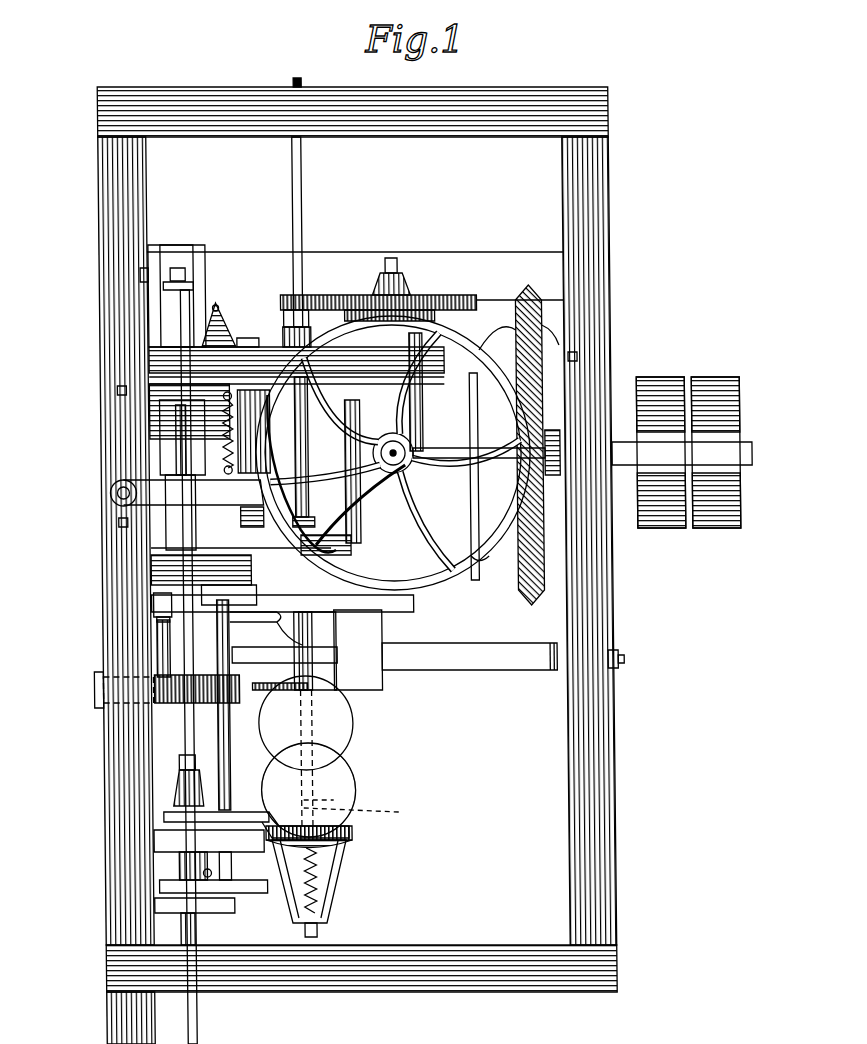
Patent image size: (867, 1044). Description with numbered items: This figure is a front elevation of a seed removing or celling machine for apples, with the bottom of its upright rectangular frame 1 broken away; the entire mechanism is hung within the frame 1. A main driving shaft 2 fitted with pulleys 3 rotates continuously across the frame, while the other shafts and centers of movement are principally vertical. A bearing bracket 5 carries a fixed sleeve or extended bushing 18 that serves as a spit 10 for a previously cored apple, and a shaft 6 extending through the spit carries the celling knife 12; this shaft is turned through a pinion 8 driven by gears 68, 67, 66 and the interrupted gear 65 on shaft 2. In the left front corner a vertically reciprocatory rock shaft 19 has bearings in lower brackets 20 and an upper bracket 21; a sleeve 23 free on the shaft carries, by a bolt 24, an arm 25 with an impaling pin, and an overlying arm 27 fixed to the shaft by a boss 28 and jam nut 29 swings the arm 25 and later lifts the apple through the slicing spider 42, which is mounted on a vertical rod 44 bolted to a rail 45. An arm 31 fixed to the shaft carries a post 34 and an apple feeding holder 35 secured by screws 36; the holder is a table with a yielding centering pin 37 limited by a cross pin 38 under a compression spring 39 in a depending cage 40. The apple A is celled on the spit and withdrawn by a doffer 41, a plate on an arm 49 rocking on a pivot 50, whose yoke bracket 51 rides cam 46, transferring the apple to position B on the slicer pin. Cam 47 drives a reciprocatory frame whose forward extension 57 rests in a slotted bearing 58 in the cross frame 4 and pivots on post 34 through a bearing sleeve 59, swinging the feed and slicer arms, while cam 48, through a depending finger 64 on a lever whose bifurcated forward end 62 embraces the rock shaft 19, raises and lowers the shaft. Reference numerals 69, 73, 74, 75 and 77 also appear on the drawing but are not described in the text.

The frame 1 is at (603, 184).
The main driving shaft 2 is at (628, 468).
The pulleys 3 is at (742, 482).
The cross frame 4 is at (421, 555).
The bearing bracket 5 is at (312, 545).
The shaft 6 is at (300, 430).
The pinion 8 is at (292, 292).
The spit 10 is at (331, 651).
The celling knife 12 is at (287, 721).
The fixed sleeve or extended bushing 18 is at (320, 660).
The rock shaft 19 is at (180, 312).
The lower brackets 20 is at (170, 840).
The upper bracket 21 is at (160, 450).
The sleeve 23 is at (175, 893).
The bolt 24 is at (205, 880).
The arm 25 is at (290, 875).
The arm 27 is at (258, 815).
The boss 28 is at (184, 782).
The jam nut 29 is at (174, 763).
The arm 31 is at (236, 808).
The post 34 is at (228, 783).
The apple feeding holder 35 is at (350, 832).
The screws 36 is at (228, 867).
The centering pin 37 is at (358, 806).
The cross pin 38 is at (340, 853).
The compression spring 39 is at (332, 903).
The cage 40 is at (324, 922).
The doffer 41 is at (272, 690).
The slicing spider 42 is at (92, 698).
The vertical rod 44 is at (158, 650).
The rail 45 is at (152, 608).
The cam 46 is at (362, 508).
The cam 47 is at (252, 527).
The cam 48 is at (175, 523).
The arm 49 is at (372, 678).
The pivot 50 is at (560, 668).
The yoke bracket 51 is at (378, 622).
The forward extension 57 is at (241, 577).
The slotted bearing 58 is at (252, 622).
The bearing sleeve 59 is at (276, 696).
The bifurcated forward end 62 is at (195, 290).
The depending finger 64 is at (165, 309).
The interrupted gear 65 is at (545, 308).
The gear 66 is at (482, 558).
The gear 67 is at (452, 314).
The gear 68 is at (434, 298).
The cone 69 is at (396, 258).
The arm 73 is at (193, 492).
The pivot 74 is at (110, 493).
The spring 75 is at (296, 388).
The post 77 is at (248, 445).
The apple A is at (352, 792).
The apple position B is at (350, 718).